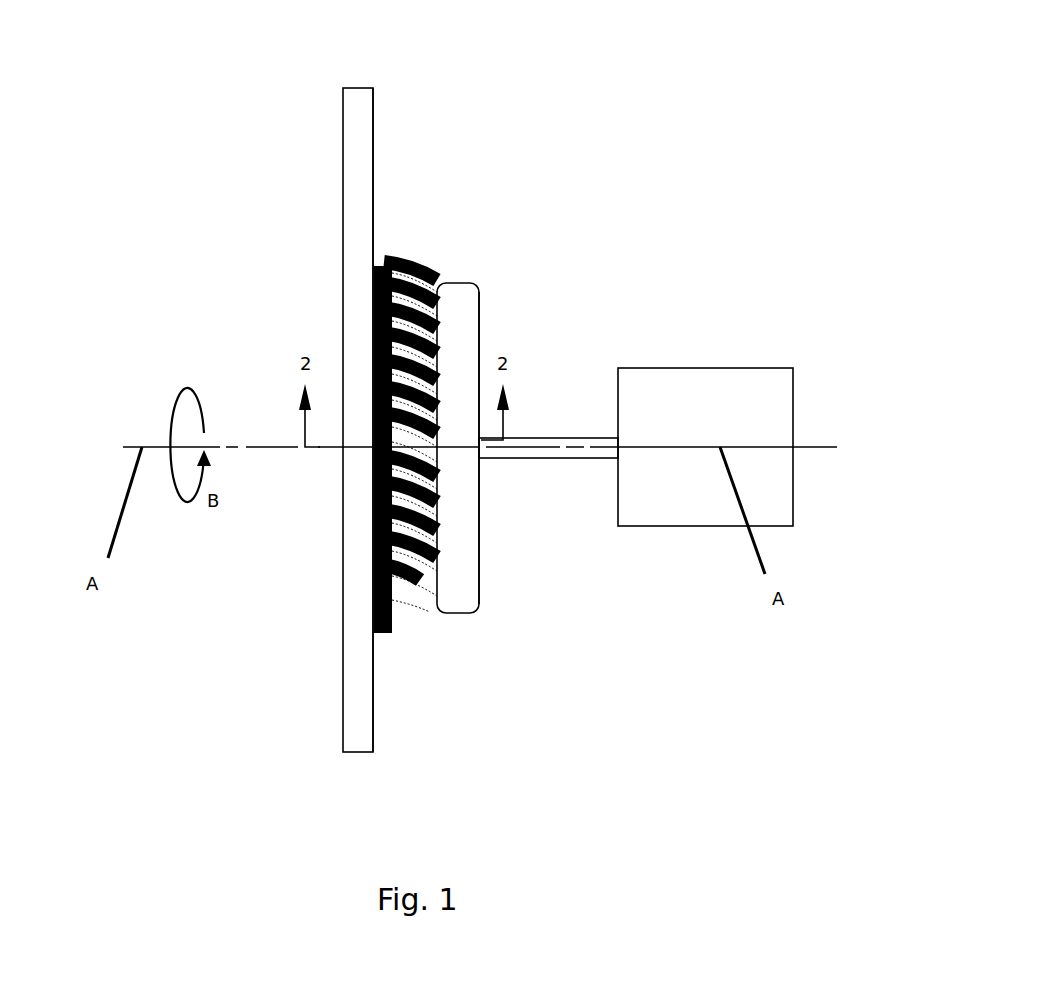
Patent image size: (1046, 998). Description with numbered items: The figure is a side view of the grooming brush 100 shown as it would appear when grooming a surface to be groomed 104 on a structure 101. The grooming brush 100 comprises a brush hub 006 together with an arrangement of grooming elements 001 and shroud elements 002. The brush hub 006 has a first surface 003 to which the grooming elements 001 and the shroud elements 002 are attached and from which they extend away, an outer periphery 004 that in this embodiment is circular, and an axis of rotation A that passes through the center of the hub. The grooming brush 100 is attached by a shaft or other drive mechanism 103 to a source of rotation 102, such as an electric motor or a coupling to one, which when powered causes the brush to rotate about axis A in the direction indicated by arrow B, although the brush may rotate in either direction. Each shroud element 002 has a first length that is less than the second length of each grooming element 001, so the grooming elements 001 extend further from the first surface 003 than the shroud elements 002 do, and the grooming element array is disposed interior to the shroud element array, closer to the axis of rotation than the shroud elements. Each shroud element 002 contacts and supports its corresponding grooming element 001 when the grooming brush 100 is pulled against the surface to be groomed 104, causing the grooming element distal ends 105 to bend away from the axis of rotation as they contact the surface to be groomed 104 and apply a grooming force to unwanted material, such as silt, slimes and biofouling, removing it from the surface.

The grooming brush 100 is at (522, 519).
The structure 101 is at (355, 279).
The source of rotation 102 is at (716, 367).
The shaft or other drive mechanism 103 is at (563, 437).
The surface to be groomed 104 is at (376, 150).
The grooming element distal ends 105 is at (385, 264).
The grooming elements 001 is at (403, 262).
The shroud elements 002 is at (430, 285).
The first surface 003 is at (377, 490).
The outer periphery 004 is at (467, 280).
The brush hub 006 is at (479, 315).